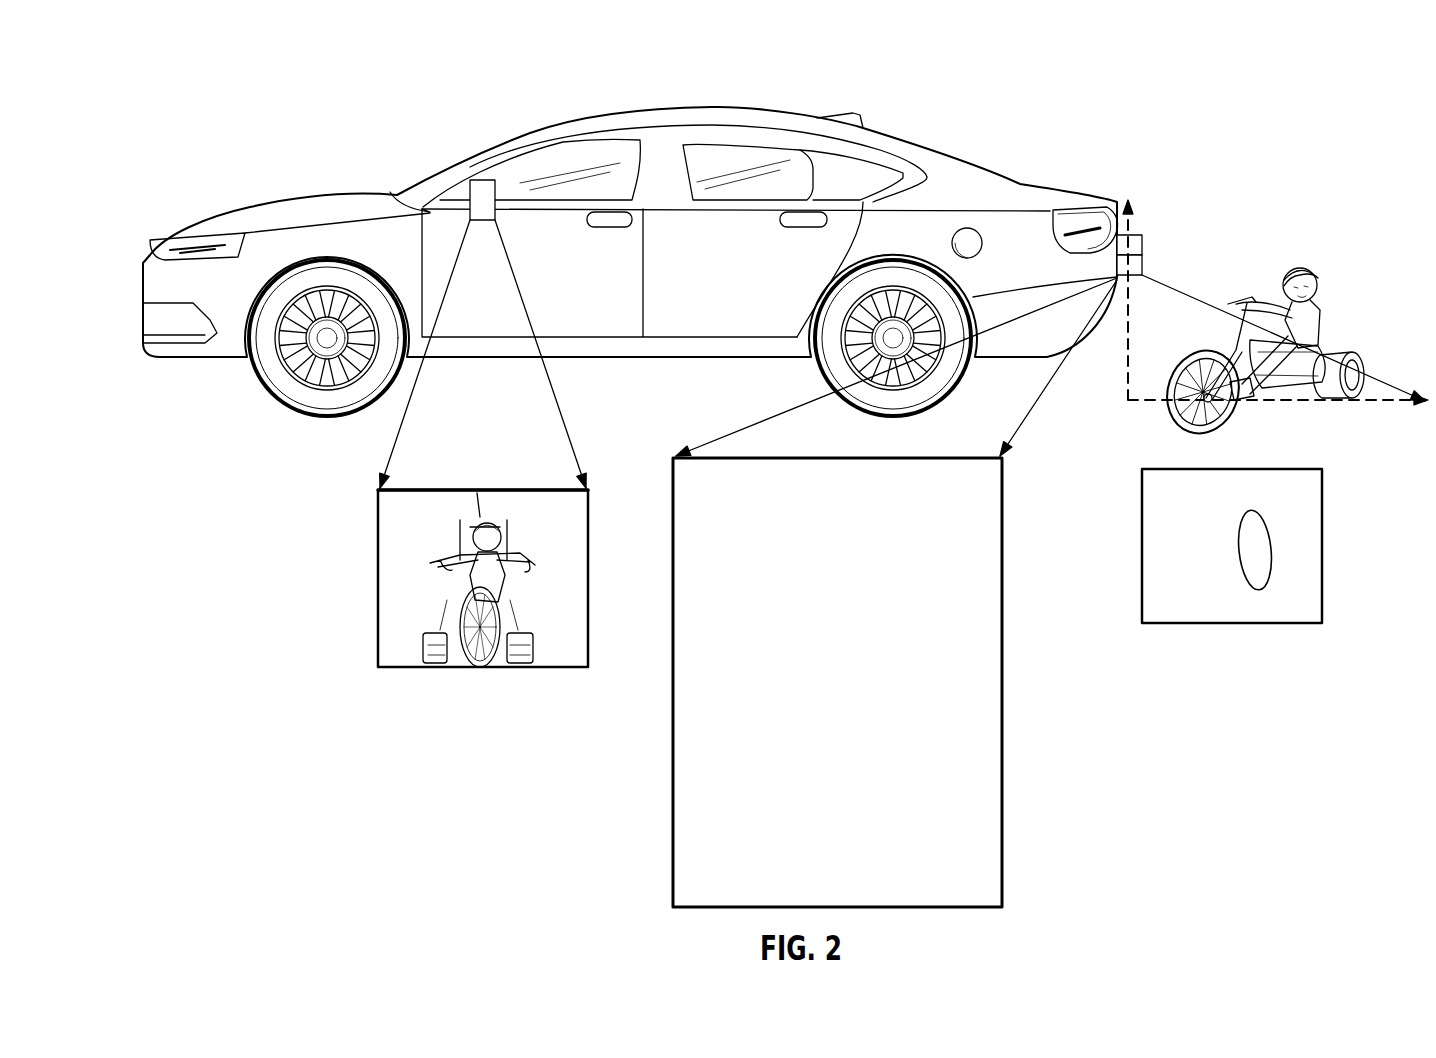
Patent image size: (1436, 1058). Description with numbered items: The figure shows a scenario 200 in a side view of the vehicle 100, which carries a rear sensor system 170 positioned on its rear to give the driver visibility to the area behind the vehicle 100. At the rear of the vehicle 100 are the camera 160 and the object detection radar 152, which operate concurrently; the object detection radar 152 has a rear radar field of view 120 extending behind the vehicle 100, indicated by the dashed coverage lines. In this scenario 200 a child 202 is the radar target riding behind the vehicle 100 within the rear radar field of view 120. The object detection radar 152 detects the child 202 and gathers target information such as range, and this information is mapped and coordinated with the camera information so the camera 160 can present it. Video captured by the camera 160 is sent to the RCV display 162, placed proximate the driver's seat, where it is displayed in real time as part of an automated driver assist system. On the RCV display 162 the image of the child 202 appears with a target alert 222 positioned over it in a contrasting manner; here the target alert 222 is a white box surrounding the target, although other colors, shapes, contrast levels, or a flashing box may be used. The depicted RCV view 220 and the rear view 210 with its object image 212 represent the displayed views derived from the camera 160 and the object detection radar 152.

The vehicle 100 is at (713, 108).
The scenario 200 is at (230, 83).
The RCV display 162 is at (483, 180).
The camera 160 is at (1132, 243).
The object detection radar 152 is at (1136, 266).
The rear radar field of view 120 is at (1378, 405).
The child 202 is at (1303, 268).
The rear sensor system 170 is at (837, 457).
The RCV view image 220 is at (377, 630).
The target alert 222 is at (447, 587).
The rear view image 210 is at (1322, 545).
The object in rear view 212 is at (1248, 515).